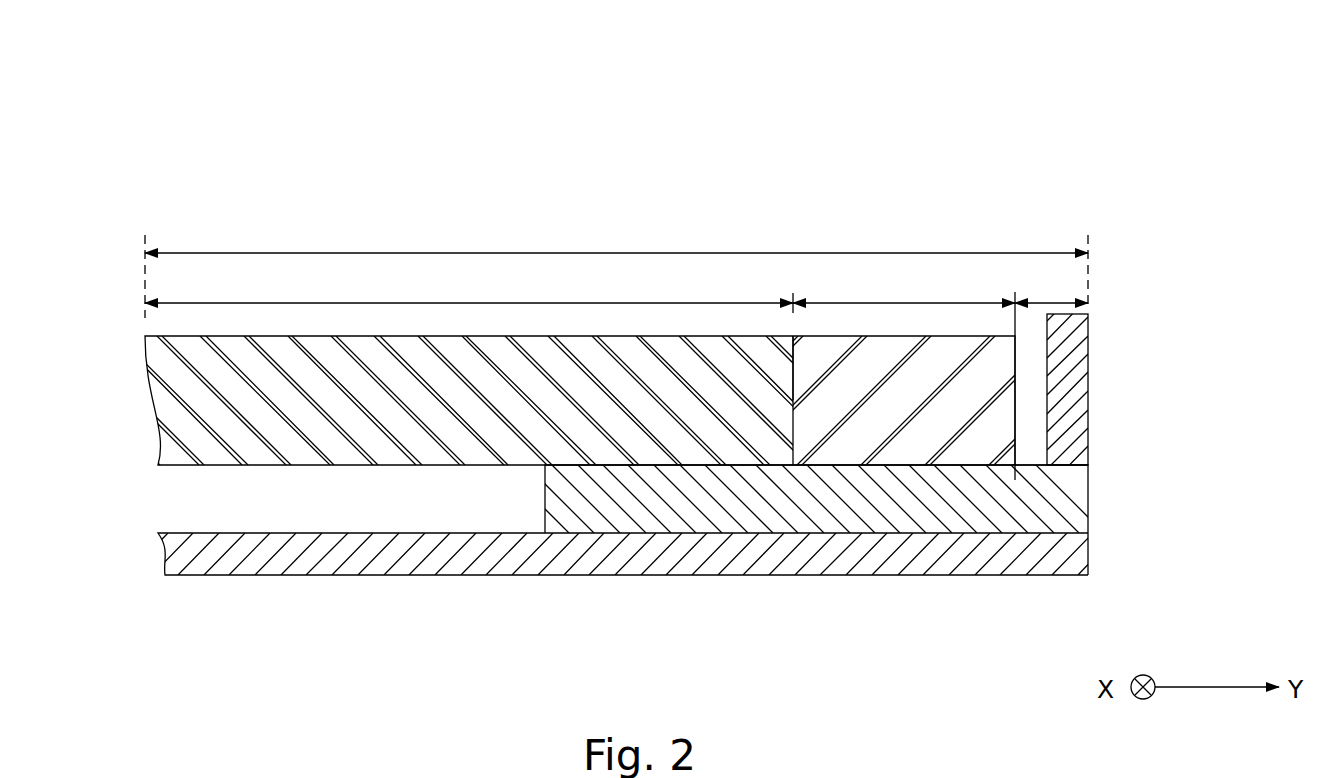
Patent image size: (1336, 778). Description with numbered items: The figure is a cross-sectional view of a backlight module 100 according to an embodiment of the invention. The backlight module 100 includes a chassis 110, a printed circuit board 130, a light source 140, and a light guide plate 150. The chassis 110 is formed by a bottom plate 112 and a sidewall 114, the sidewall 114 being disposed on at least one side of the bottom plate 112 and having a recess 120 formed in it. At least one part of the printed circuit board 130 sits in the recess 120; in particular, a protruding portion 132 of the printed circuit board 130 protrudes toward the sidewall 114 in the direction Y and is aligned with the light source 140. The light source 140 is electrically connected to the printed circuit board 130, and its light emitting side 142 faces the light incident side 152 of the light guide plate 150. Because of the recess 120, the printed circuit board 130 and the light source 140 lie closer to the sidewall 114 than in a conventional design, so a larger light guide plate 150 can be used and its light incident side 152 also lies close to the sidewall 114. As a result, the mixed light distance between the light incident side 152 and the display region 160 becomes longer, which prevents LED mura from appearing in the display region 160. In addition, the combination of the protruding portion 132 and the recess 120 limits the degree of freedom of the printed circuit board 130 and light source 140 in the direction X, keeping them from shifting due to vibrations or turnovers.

The backlight module 100 is at (113, 64).
The chassis 110 is at (1197, 430).
The bottom plate 112 is at (1077, 555).
The sidewall 114 is at (1077, 444).
The recess 120 is at (1062, 457).
The printed circuit board 130 is at (835, 500).
The protruding portion 132 is at (1027, 478).
The light source 140 is at (955, 352).
The light emitting side 142 is at (798, 366).
The light guide plate 150 is at (343, 352).
The light incident side 152 is at (789, 351).
The display region 160 is at (146, 248).